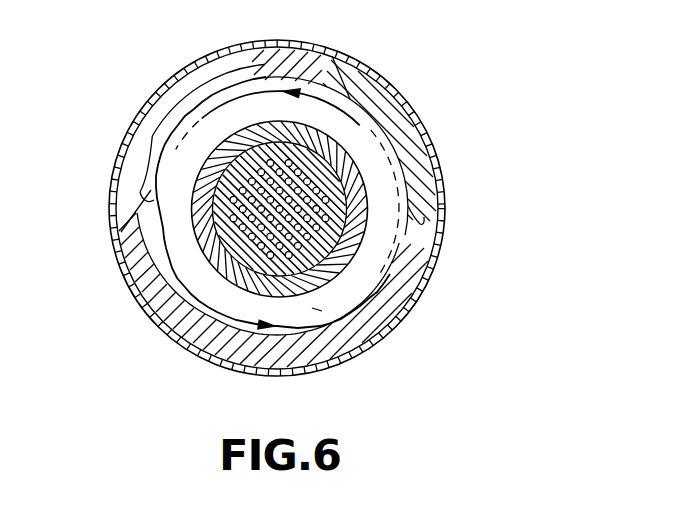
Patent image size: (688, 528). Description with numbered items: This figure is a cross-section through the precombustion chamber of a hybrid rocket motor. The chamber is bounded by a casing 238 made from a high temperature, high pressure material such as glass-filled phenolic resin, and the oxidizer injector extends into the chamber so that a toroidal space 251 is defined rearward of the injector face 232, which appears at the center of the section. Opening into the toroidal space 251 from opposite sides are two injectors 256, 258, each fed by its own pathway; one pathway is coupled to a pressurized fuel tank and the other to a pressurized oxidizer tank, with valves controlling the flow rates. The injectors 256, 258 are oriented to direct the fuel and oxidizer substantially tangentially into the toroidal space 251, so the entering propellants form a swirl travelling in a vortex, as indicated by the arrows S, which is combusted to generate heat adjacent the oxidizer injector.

The casing 238 is at (217, 147).
The injector face 232 is at (246, 138).
The injector 258 is at (441, 195).
The injector 256 is at (124, 224).
The toroidal space 251 is at (318, 308).
The arrows indicating propellant swirl S is at (352, 78).